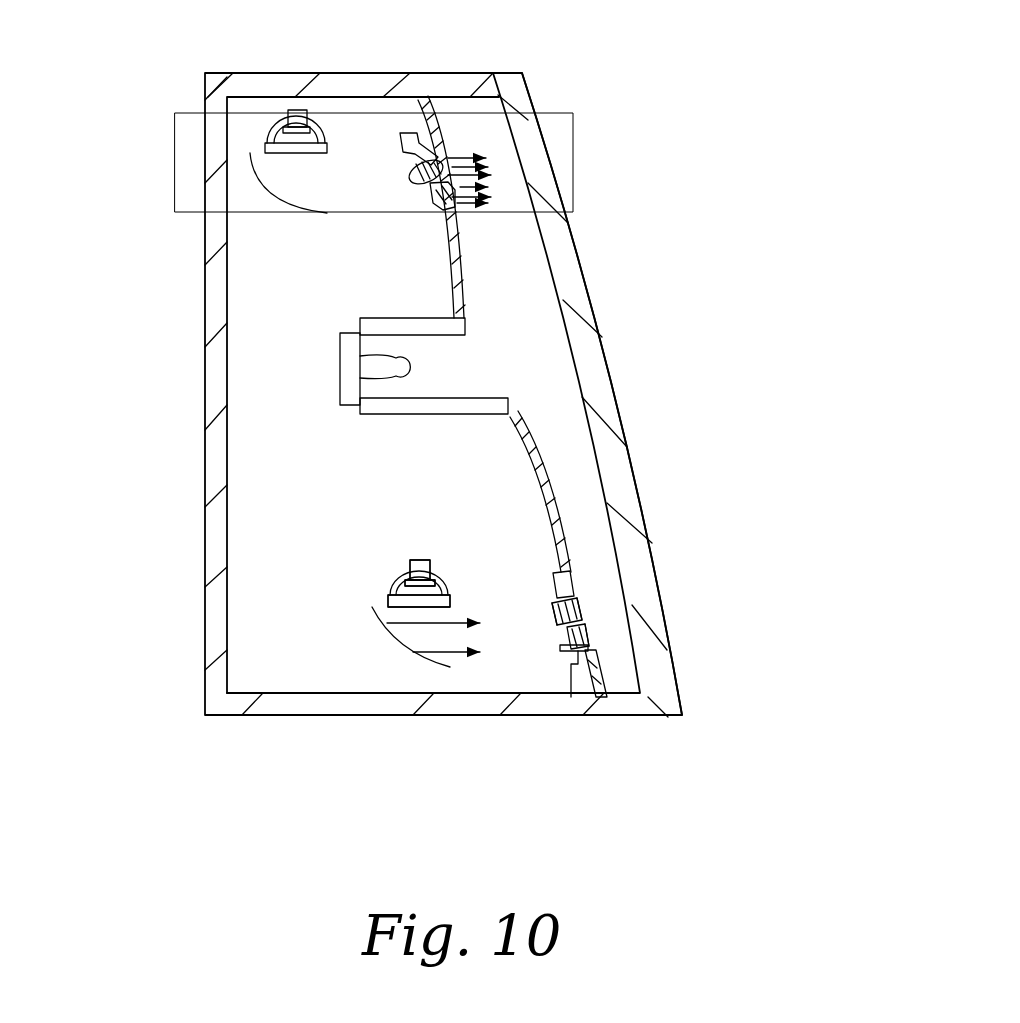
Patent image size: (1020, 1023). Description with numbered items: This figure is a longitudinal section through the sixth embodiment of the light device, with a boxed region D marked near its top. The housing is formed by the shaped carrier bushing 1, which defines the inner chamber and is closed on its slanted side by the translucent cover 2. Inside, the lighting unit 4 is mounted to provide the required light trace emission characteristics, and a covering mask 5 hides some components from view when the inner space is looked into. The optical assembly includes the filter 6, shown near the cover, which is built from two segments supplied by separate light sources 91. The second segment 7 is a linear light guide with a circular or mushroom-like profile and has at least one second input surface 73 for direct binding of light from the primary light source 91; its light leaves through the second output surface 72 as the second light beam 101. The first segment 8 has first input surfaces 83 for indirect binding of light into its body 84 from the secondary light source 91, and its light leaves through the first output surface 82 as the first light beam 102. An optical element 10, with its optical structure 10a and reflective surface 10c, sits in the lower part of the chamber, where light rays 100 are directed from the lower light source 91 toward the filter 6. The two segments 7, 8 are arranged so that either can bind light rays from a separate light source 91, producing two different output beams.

The carrier bushing 1 is at (203, 330).
The translucent cover 2 is at (600, 316).
The lighting unit 4 is at (337, 365).
The covering mask 5 is at (470, 272).
The filter 6 is at (588, 614).
The second segment 7 is at (558, 630).
The first segment 8 is at (580, 653).
The optical element 10 is at (387, 588).
The optical structure 10a is at (389, 599).
The reflective surface 10c is at (387, 636).
The second output surface 72 is at (586, 606).
The second input surface 73 is at (550, 614).
The first output surface 82 is at (590, 637).
The first input surface 83 is at (551, 581).
The body 84 is at (574, 572).
The light source 91 is at (407, 567).
The light ray 100 is at (472, 648).
The second light beam 101 is at (497, 168).
The first light beam 102 is at (500, 202).
The region D is at (560, 111).